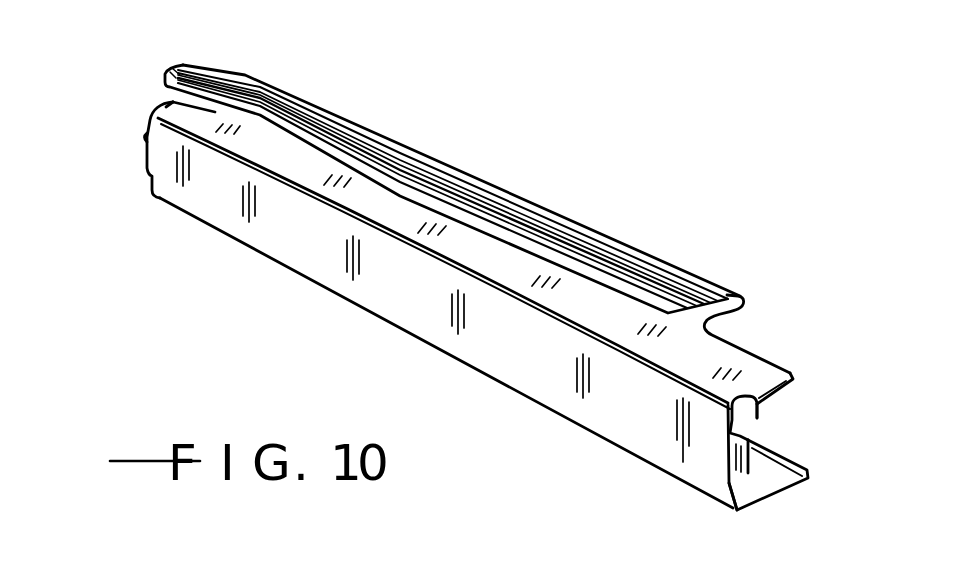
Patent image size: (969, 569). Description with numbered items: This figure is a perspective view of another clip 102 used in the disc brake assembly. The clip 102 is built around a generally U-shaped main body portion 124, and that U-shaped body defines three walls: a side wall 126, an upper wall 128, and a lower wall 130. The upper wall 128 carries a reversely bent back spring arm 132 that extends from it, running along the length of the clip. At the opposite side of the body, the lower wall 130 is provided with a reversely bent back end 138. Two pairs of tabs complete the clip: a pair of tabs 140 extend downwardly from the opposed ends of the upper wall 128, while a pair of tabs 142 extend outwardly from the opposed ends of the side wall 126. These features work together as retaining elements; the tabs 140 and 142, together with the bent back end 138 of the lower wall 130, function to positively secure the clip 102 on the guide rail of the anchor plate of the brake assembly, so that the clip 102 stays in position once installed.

The clip 102 is at (466, 297).
The main body portion 124 is at (312, 286).
The side wall 126 is at (227, 202).
The upper wall 128 is at (738, 360).
The lower wall 130 is at (763, 483).
The spring arm 132 is at (430, 165).
The bent back end 138 is at (793, 470).
The tabs 140 is at (167, 107).
The tabs 142 is at (148, 142).